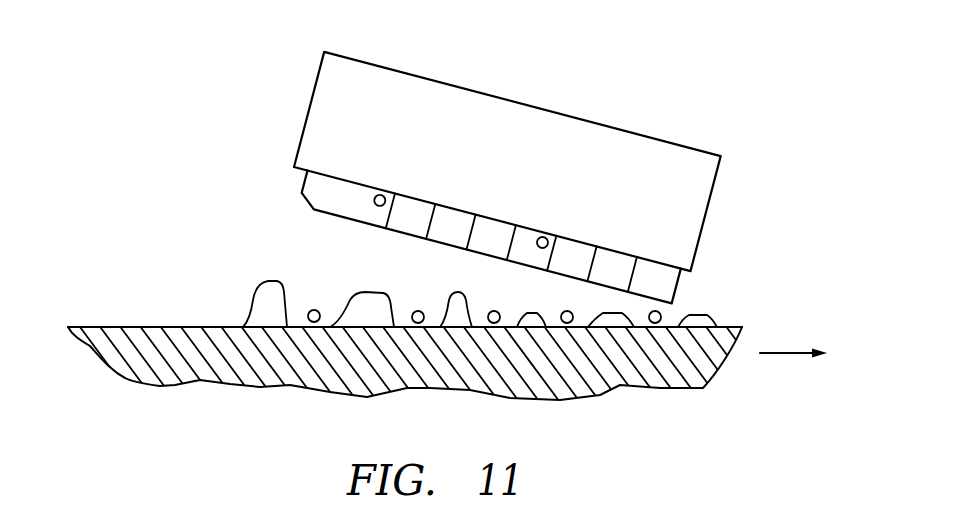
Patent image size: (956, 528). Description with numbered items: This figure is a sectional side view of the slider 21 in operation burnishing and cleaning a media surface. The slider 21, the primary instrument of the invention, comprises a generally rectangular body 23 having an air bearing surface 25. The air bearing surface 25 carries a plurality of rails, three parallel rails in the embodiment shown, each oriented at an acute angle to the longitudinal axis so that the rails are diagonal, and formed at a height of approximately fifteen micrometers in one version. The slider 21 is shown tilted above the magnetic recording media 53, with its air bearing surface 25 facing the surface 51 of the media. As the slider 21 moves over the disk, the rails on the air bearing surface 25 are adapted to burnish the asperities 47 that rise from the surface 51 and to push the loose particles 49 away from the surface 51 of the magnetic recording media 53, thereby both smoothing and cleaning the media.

The slider 21 is at (521, 165).
The body 23 is at (663, 163).
The air bearing surface 25 is at (283, 217).
The asperities 47 is at (252, 303).
The loose particles 49 is at (541, 238).
The surface 51 is at (113, 325).
The magnetic recording media 53 is at (225, 373).